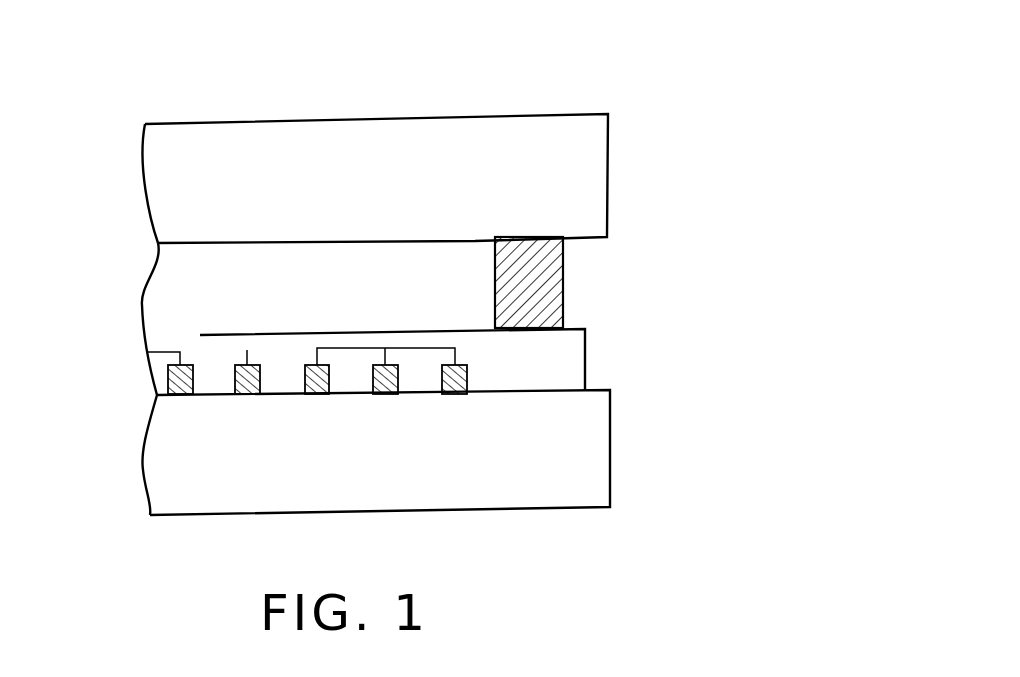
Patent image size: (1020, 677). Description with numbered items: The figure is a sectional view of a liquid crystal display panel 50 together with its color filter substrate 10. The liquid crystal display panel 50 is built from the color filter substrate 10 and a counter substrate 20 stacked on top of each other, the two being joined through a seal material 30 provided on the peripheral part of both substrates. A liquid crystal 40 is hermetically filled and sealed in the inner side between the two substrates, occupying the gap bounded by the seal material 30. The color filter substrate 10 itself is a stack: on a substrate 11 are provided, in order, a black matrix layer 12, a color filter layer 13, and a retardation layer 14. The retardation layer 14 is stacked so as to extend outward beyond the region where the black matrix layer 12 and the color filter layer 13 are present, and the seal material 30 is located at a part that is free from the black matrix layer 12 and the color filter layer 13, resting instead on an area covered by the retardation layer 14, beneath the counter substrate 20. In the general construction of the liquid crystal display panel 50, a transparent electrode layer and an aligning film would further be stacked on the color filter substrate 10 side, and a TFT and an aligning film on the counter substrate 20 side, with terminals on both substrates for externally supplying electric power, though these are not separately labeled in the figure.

The liquid crystal display panel 50 is at (378, 103).
The counter substrate 20 is at (133, 124).
The liquid crystal 40 is at (142, 266).
The retardation layer 14 is at (200, 345).
The seal material 30 is at (563, 280).
The color filter substrate 10 is at (380, 393).
The substrate 11 is at (593, 432).
The black matrix layer 12 is at (457, 393).
The color filter layer 13 is at (413, 360).